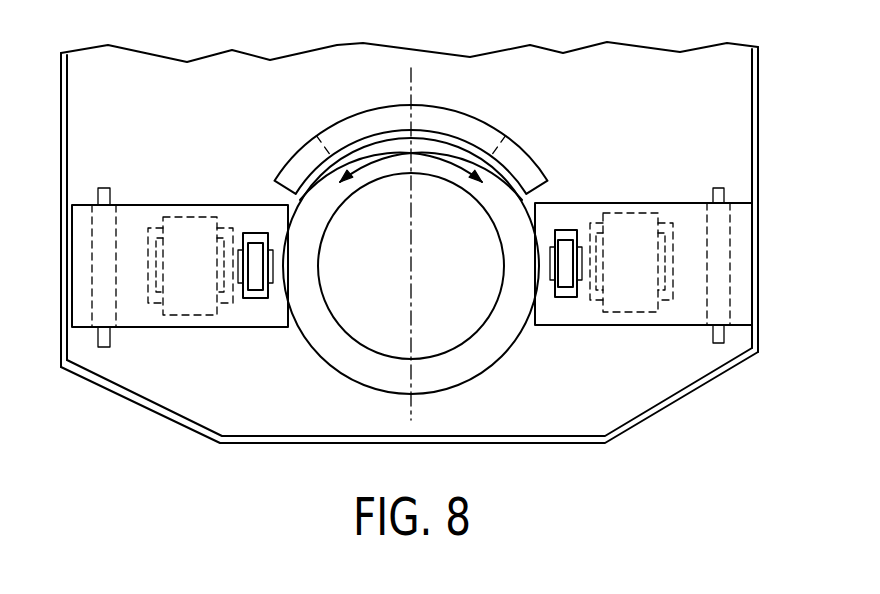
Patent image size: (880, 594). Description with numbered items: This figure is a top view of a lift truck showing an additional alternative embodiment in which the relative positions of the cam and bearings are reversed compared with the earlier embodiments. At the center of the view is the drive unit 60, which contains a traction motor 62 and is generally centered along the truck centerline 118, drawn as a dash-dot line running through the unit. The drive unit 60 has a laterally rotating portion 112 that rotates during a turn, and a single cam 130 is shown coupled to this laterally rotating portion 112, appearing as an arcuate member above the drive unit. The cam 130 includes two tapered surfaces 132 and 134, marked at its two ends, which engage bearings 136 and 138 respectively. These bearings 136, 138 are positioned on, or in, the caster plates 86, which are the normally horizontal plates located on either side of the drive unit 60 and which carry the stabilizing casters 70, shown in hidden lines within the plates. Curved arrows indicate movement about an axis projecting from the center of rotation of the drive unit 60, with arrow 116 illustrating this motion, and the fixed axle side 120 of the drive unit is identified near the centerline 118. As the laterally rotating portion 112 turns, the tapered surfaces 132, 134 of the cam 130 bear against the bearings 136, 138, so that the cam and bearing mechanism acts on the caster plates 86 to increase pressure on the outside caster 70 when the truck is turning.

The drive unit 60 is at (326, 382).
The traction motor 62 is at (470, 281).
The stabilizing caster 70 is at (186, 228).
The caster plate 86 is at (187, 327).
The laterally rotating portion 112 is at (455, 372).
The arrow 116 is at (446, 158).
The truck centerline 118 is at (408, 84).
The fixed axle side 120 is at (426, 138).
The cam 130 is at (327, 130).
The tapered surface 132 is at (535, 156).
The tapered surface 134 is at (285, 163).
The bearing 136 is at (568, 290).
The bearing 138 is at (252, 292).